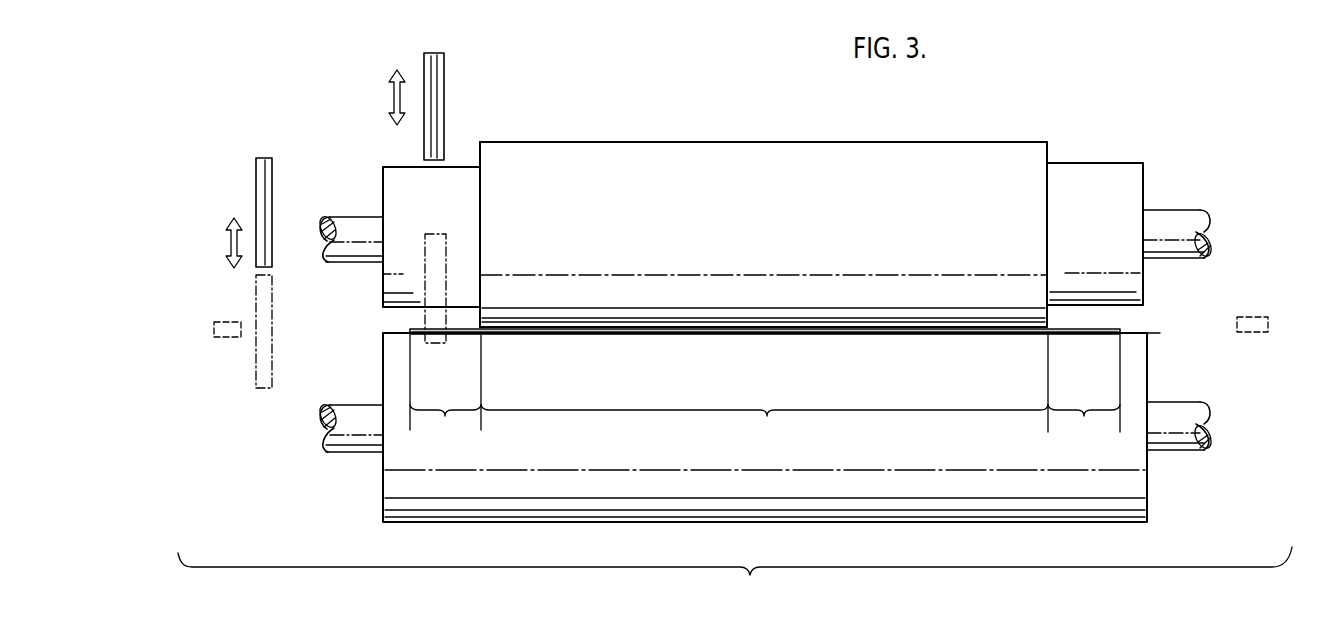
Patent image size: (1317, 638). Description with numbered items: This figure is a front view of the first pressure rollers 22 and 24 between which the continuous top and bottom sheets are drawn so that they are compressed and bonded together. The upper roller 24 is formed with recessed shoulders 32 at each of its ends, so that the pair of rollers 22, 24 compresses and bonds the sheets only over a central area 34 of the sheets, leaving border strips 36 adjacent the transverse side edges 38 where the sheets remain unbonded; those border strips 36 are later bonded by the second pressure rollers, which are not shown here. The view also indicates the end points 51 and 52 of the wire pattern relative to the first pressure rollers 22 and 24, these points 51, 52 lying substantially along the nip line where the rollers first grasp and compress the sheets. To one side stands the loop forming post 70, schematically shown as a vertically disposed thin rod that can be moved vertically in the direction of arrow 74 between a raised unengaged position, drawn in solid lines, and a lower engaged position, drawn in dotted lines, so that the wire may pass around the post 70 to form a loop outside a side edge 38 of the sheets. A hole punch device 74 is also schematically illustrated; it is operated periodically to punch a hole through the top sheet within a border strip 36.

The first pressure roller 22 is at (892, 505).
The first pressure roller 24 is at (866, 197).
The recessed shoulders 32 is at (1050, 150).
The central area 34 is at (764, 389).
The border strips 36 is at (765, 389).
The transverse side edges 38 is at (1121, 329).
The end point 51 is at (211, 307).
The end point 52 is at (1271, 312).
The loop forming post 70 is at (272, 193).
The hole punch device 74 is at (444, 92).